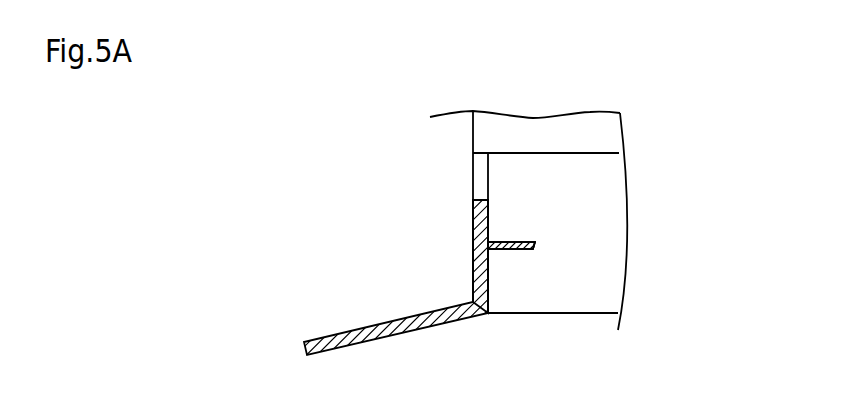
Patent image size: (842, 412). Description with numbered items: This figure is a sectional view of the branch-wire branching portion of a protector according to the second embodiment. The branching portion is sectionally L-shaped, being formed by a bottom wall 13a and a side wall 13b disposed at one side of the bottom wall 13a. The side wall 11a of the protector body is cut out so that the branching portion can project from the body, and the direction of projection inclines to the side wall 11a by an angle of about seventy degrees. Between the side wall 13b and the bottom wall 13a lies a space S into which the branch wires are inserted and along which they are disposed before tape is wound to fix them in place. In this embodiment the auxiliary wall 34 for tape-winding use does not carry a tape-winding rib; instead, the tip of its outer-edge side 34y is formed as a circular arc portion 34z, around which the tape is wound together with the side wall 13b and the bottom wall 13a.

The side wall 11a is at (583, 308).
The bottom wall 13a is at (338, 333).
The side wall 13b is at (488, 287).
The space S is at (408, 288).
The auxiliary wall for tape-winding use 34 is at (512, 249).
The circular arc portion 34z is at (535, 245).
The outer-edge side 34y is at (535, 242).